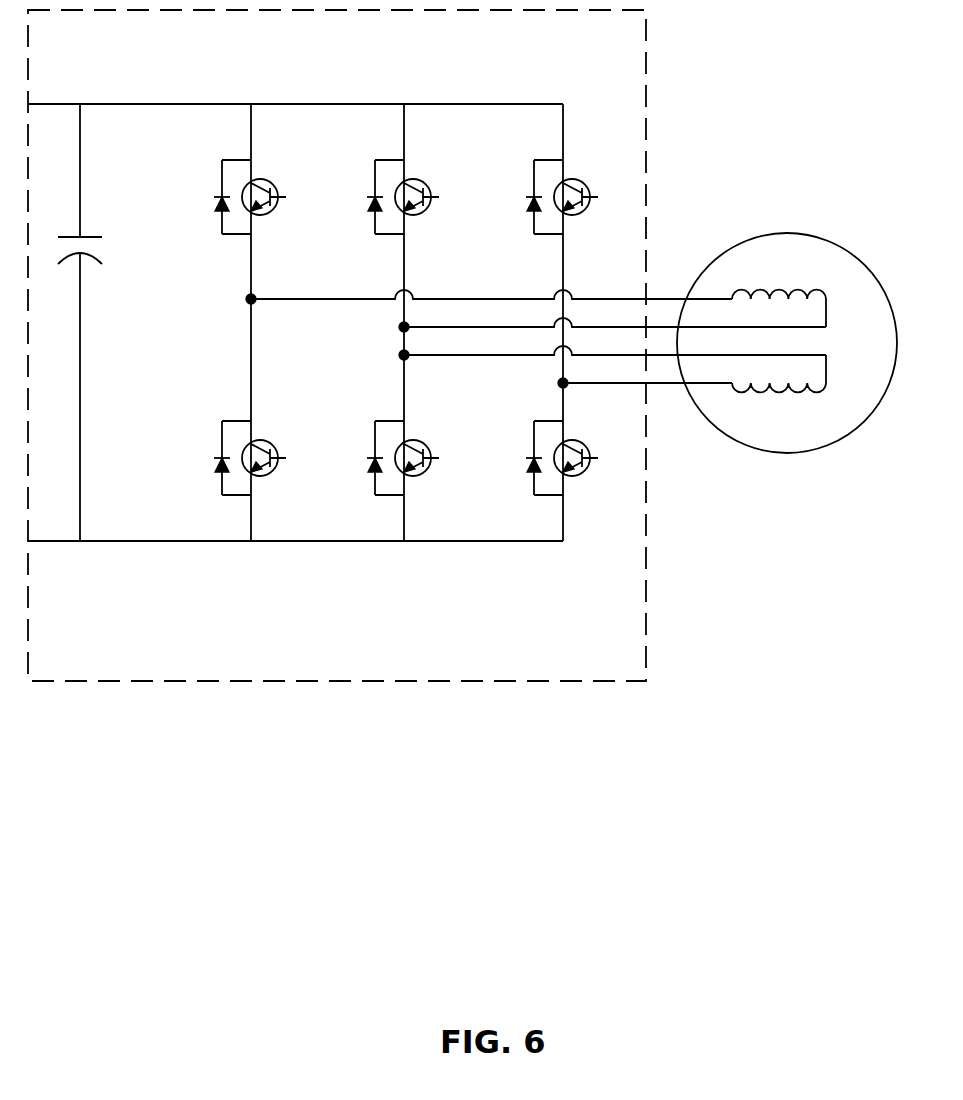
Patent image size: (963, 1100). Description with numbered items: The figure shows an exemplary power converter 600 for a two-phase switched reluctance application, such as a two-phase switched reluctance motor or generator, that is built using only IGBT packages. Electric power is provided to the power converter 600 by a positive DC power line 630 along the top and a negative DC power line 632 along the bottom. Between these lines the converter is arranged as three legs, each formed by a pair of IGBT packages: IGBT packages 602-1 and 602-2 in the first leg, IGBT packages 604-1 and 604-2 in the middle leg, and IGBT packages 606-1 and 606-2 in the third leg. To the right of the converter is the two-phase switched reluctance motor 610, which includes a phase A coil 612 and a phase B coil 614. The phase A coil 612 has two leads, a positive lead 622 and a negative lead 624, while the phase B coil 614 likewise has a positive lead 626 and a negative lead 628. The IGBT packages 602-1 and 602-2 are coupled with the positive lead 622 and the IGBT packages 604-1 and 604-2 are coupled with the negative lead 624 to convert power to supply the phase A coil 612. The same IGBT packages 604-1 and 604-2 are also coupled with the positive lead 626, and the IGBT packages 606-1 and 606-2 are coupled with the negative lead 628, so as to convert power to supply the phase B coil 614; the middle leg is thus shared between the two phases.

The power converter 600 is at (578, 70).
The IGBT package 602-1 is at (236, 216).
The IGBT package 602-2 is at (236, 474).
The IGBT package 604-1 is at (389, 216).
The IGBT package 604-2 is at (389, 474).
The IGBT package 606-1 is at (548, 216).
The IGBT package 606-2 is at (548, 474).
The two-phase switched reluctance motor 610 is at (807, 283).
The phase A coil 612 is at (815, 310).
The phase B coil 614 is at (815, 372).
The positive lead 622 is at (637, 299).
The negative lead 624 is at (595, 327).
The positive lead 626 is at (603, 355).
The negative lead 628 is at (657, 383).
The positive DC power line 630 is at (48, 104).
The negative DC power line 632 is at (58, 541).